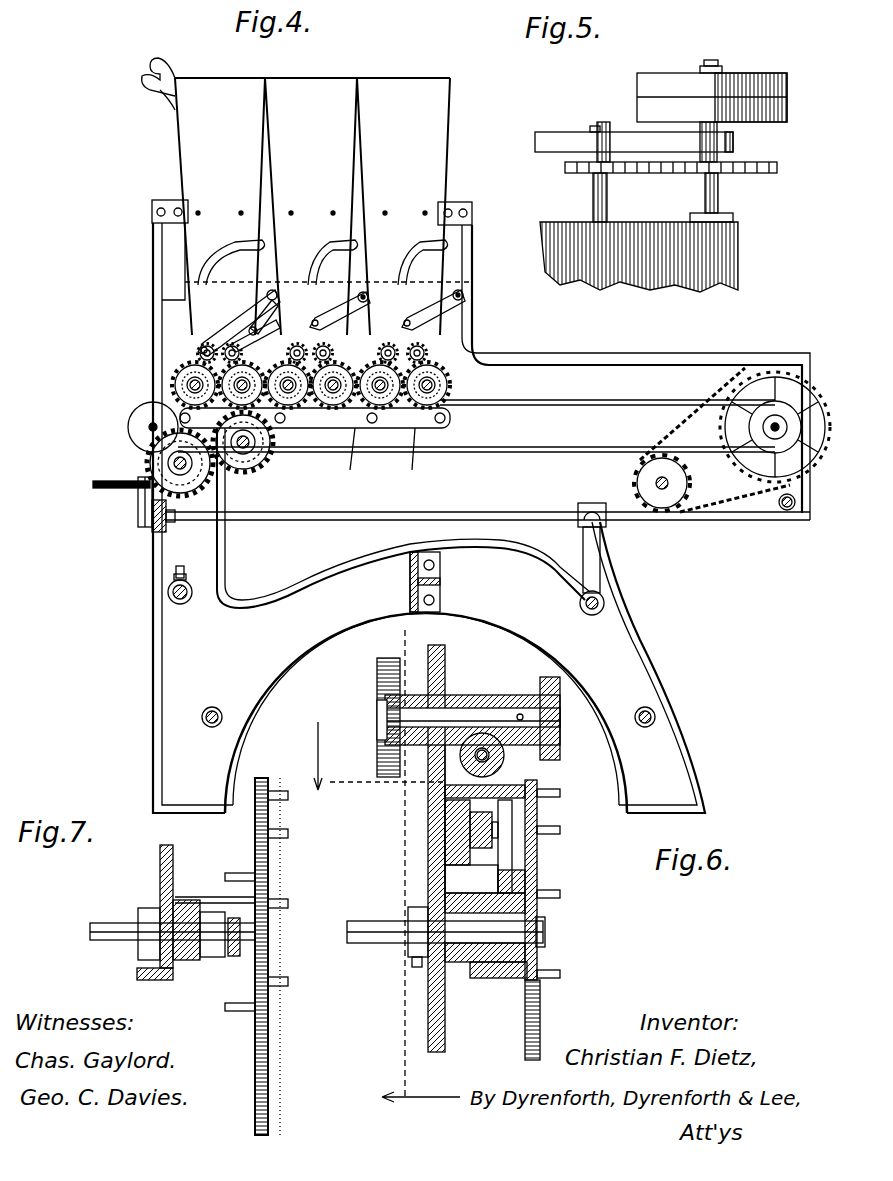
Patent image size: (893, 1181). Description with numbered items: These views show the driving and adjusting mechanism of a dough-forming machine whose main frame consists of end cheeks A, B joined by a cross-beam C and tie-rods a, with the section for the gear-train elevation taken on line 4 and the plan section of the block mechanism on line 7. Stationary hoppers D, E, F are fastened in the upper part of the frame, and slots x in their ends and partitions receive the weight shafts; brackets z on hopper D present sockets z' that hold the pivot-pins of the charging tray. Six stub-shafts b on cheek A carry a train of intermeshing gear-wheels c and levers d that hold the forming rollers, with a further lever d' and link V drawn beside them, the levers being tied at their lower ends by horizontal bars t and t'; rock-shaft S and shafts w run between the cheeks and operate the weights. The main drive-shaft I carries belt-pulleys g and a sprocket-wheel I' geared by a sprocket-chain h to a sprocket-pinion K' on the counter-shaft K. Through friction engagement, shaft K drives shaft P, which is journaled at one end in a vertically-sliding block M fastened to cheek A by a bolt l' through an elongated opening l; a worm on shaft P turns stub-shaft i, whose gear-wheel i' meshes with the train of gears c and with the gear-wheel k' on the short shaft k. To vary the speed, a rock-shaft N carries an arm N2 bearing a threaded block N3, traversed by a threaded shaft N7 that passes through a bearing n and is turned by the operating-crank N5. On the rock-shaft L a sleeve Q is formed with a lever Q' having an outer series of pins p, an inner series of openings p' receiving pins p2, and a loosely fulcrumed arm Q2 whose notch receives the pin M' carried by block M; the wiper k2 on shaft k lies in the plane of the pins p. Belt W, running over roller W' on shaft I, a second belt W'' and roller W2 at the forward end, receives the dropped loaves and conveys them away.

In FIG. 4, the hopper D is at (312, 206).
In FIG. 4, the hopper E is at (334, 206).
In FIG. 4, the hopper F is at (420, 206).
In FIG. 4, the socket z' is at (152, 69).
In FIG. 4, the bracket z is at (143, 112).
In FIG. 4, the end cheek B is at (175, 662).
In FIG. 5, the end cheek B is at (558, 132).
In FIG. 4, the slot x is at (419, 248).
In FIG. 4, the lever arm d' is at (315, 323).
In FIG. 4, the rock-shaft S is at (263, 300).
In FIG. 4, the rock-shaft V is at (300, 340).
In FIG. 4, the shaft w is at (465, 295).
In FIG. 4, the stub-shaft b is at (380, 355).
In FIG. 4, the gear-wheel c is at (398, 430).
In FIG. 4, the lever d is at (324, 418).
In FIG. 4, the horizontal bar t' is at (349, 459).
In FIG. 4, the horizontal bar t is at (410, 459).
In FIG. 4, the roller W' is at (476, 426).
In FIG. 5, the roller W' is at (740, 231).
In FIG. 4, the belt W'' is at (702, 388).
In FIG. 4, the roller W2 is at (135, 425).
In FIG. 4, the short shaft k is at (156, 463).
In FIG. 6, the short shaft k is at (472, 699).
In FIG. 4, the gear-wheel i' is at (243, 458).
In FIG. 4, the stub-shaft i is at (278, 461).
In FIG. 4, the operating-crank N5 is at (93, 487).
In FIG. 4, the gear-wheel k' is at (123, 506).
In FIG. 6, the gear-wheel k' is at (362, 717).
In FIG. 4, the bearing n is at (158, 532).
In FIG. 4, the rock-shaft L is at (168, 593).
In FIG. 6, the rock-shaft L is at (400, 925).
In FIG. 7, the rock-shaft L is at (115, 928).
In FIG. 4, the tie-rod a is at (648, 724).
In FIG. 4, the cross-beam C is at (410, 564).
In FIG. 4, the rod N7 is at (500, 512).
In FIG. 4, the threaded block N3 is at (592, 503).
In FIG. 4, the arm N2 is at (583, 556).
In FIG. 4, the rock-shaft N is at (580, 603).
In FIG. 4, the counter-shaft K is at (657, 509).
In FIG. 5, the counter-shaft K is at (573, 197).
In FIG. 4, the sprocket-pinion K' is at (697, 531).
In FIG. 5, the sprocket-pinion K' is at (540, 181).
In FIG. 4, the sprocket-chain h is at (740, 505).
In FIG. 5, the sprocket-chain h is at (672, 175).
In FIG. 4, the sprocket-wheel I' is at (775, 413).
In FIG. 5, the sprocket-wheel I' is at (770, 143).
In FIG. 4, the main drive-shaft I is at (723, 441).
In FIG. 5, the main drive-shaft I is at (731, 193).
In FIG. 6, the section line 7 is at (370, 761).
In FIG. 6, the section line 4 is at (421, 1107).
In FIG. 6, the end cheek A is at (428, 1005).
In FIG. 7, the end cheek A is at (160, 865).
In FIG. 6, the wiper k2 is at (545, 685).
In FIG. 6, the shaft P is at (500, 760).
In FIG. 6, the pin M' is at (528, 788).
In FIG. 7, the pin M' is at (284, 919).
In FIG. 6, the pin p is at (567, 883).
In FIG. 7, the pin p is at (289, 888).
In FIG. 6, the pin p2 is at (560, 868).
In FIG. 6, the sliding block M is at (405, 822).
In FIG. 7, the sliding block M is at (187, 906).
In FIG. 6, the elongated opening l is at (441, 846).
In FIG. 6, the bolt l' is at (442, 846).
In FIG. 7, the bolt l' is at (213, 955).
In FIG. 6, the lever Q2 is at (537, 880).
In FIG. 7, the lever Q2 is at (255, 950).
In FIG. 6, the sleeve Q is at (486, 953).
In FIG. 6, the lever Q' is at (554, 1020).
In FIG. 7, the lever Q' is at (287, 956).
In FIG. 7, the opening p' is at (230, 918).
In FIG. 5, the belt-pulley g is at (645, 105).
In FIG. 5, the belt W is at (639, 257).